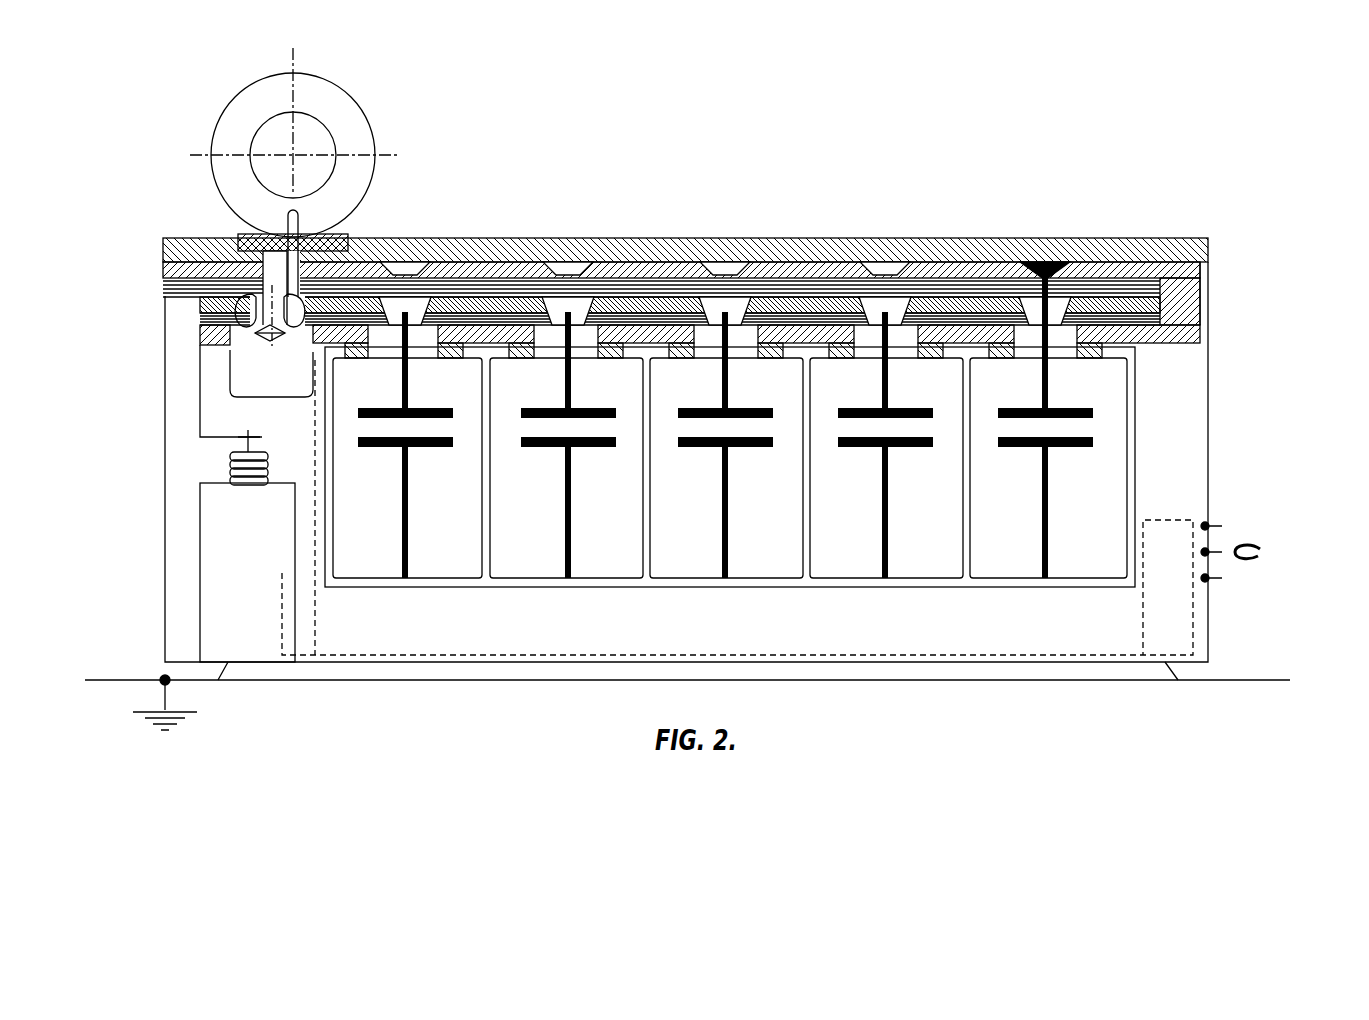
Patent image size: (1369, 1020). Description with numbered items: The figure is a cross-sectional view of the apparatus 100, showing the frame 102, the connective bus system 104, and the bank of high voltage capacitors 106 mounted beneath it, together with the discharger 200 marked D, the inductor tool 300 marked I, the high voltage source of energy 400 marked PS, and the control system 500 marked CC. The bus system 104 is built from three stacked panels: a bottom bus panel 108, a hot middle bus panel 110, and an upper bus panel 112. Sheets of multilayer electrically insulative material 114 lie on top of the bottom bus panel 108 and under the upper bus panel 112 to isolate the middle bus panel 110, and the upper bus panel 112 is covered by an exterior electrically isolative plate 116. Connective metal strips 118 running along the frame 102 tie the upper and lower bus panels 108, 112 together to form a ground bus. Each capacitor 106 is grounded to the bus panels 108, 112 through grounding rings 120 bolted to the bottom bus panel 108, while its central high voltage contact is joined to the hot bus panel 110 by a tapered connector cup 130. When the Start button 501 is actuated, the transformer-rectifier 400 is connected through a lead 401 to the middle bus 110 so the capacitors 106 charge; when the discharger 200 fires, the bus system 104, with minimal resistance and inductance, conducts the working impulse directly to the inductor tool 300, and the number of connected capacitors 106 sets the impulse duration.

The apparatus 100 is at (748, 152).
The frame 102 is at (1197, 467).
The connective bus system 104 is at (1212, 271).
The high voltage capacitors 106 is at (1112, 406).
The bottom bus panel 108 is at (1180, 334).
The middle bus panel 110 is at (205, 301).
The upper bus panel 112 is at (1135, 265).
The multilayer electrically insulative material 114 is at (1152, 314).
The exterior electrically isolative plate 116 is at (1010, 243).
The connective metal strips 118 is at (1190, 308).
The grounding rings 120 is at (460, 358).
The tapered connector cup 130 is at (865, 312).
The discharger 200 is at (235, 353).
The inductor tool 300 is at (232, 142).
The high voltage source of energy 400 is at (220, 525).
The coil connection 401 is at (205, 406).
The control system 500 is at (1170, 587).
The Start button 501 is at (1250, 548).